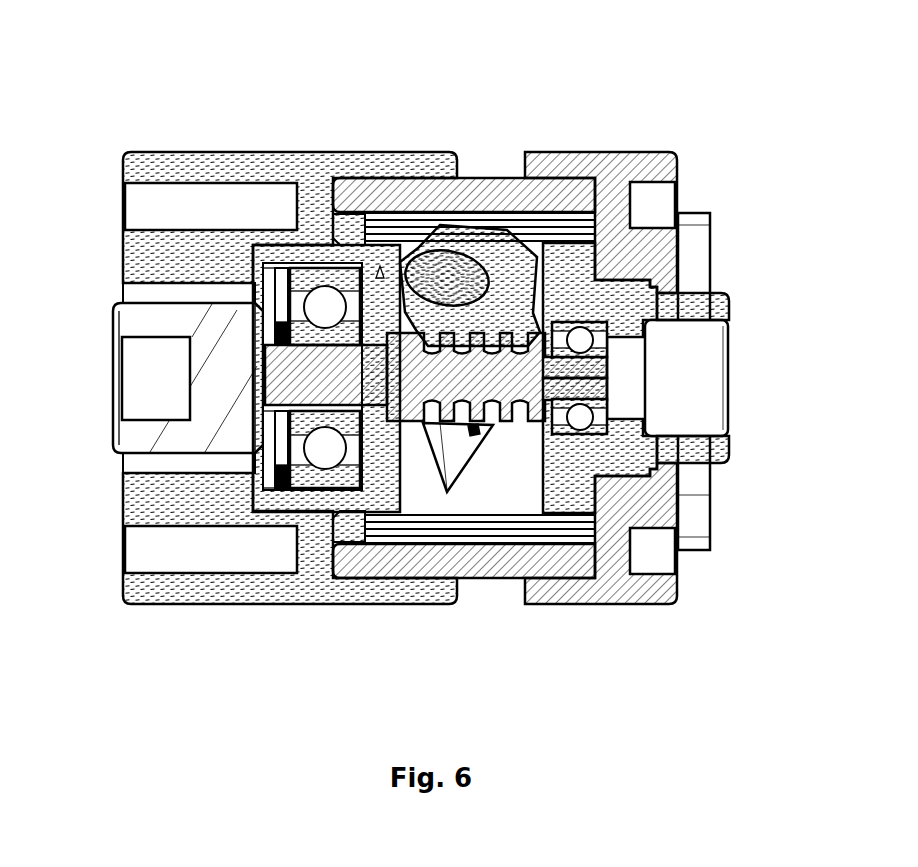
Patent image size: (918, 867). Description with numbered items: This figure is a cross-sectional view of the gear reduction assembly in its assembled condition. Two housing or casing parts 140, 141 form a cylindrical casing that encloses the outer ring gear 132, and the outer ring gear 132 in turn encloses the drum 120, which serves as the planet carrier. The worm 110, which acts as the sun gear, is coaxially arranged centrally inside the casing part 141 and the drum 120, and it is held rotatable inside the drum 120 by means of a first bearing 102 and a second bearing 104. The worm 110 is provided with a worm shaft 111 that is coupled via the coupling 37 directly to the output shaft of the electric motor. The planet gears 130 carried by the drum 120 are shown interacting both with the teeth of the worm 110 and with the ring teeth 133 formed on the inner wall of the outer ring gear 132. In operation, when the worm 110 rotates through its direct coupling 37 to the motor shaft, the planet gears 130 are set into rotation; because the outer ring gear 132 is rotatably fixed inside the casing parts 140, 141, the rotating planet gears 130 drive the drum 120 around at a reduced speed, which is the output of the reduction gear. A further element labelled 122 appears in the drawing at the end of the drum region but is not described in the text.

The coupling 37 is at (130, 332).
The first bearing 102 is at (350, 480).
The second bearing 104 is at (590, 422).
The worm 110 is at (522, 376).
The worm shaft 111 is at (300, 388).
The drum 120 is at (608, 278).
The carrier flange 122 is at (715, 305).
The planet gears 130 is at (460, 236).
The outer ring gear 132 is at (358, 190).
The ring teeth 133 is at (533, 236).
The casing part 140 is at (182, 166).
The casing part 141 is at (665, 168).